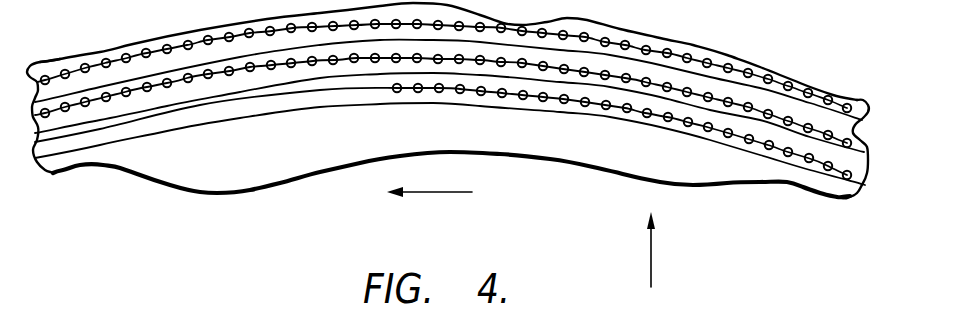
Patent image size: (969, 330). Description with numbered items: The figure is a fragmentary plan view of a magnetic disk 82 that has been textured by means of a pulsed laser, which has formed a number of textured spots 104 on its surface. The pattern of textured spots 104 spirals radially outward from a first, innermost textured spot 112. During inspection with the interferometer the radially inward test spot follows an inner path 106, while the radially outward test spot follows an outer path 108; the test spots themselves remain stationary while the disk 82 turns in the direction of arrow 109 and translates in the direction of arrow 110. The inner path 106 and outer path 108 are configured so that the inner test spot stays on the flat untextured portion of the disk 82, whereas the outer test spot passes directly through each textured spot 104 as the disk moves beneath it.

The magnetic disk 82 is at (166, 161).
The textured spots 104 is at (583, 106).
The inner path 106 is at (220, 119).
The outer path 108 is at (278, 96).
The arrow 109 is at (423, 193).
The arrow 110 is at (651, 268).
The first, innermost textured spot 112 is at (392, 93).